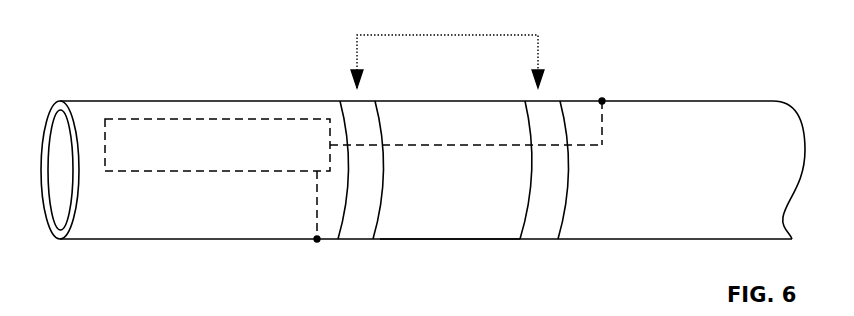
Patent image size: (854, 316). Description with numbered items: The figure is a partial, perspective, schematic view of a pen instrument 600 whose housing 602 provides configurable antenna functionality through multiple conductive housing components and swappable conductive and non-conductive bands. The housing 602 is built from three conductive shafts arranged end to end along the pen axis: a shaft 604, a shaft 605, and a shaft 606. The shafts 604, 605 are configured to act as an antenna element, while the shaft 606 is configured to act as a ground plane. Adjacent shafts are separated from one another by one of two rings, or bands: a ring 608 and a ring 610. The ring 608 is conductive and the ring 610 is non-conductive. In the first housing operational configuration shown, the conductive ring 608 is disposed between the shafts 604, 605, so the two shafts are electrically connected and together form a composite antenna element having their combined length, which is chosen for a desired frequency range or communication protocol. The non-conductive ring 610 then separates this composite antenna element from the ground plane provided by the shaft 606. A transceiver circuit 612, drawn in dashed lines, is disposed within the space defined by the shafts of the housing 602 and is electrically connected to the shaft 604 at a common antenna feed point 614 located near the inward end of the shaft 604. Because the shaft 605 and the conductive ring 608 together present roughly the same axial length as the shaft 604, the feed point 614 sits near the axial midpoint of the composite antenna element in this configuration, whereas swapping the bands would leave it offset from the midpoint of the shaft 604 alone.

The instrument 600 is at (428, 146).
The housing 602 is at (675, 47).
The shaft 604 is at (226, 101).
The shaft 605 is at (442, 239).
The shaft 606 is at (767, 101).
The ring 608 is at (343, 101).
The ring 610 is at (561, 101).
The transceiver circuit 612 is at (187, 118).
The common antenna feed point 614 is at (317, 241).